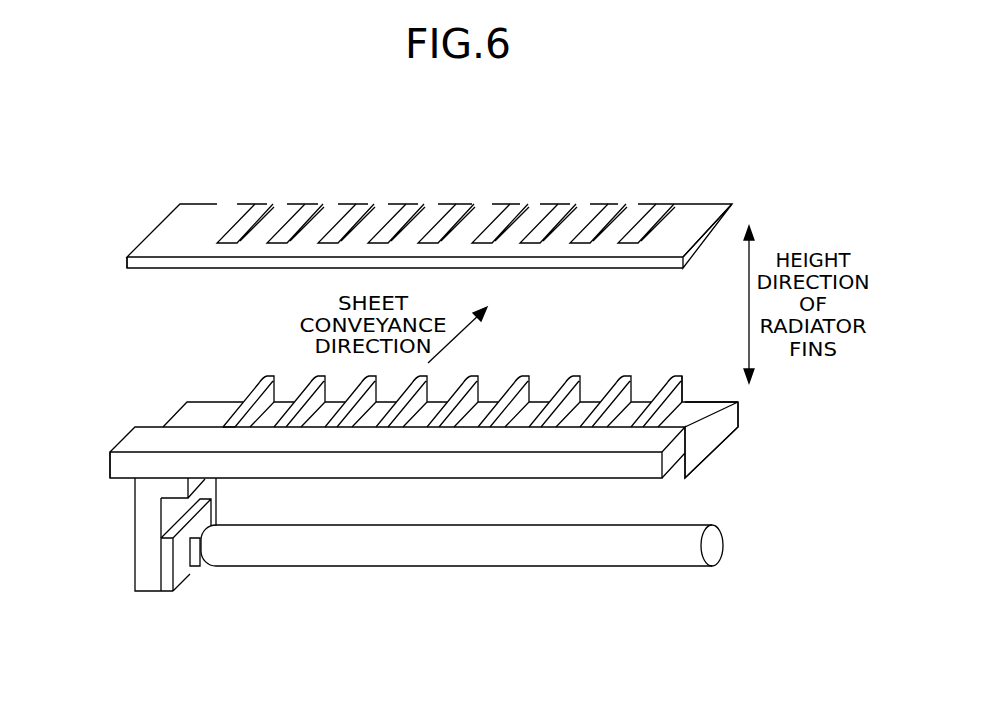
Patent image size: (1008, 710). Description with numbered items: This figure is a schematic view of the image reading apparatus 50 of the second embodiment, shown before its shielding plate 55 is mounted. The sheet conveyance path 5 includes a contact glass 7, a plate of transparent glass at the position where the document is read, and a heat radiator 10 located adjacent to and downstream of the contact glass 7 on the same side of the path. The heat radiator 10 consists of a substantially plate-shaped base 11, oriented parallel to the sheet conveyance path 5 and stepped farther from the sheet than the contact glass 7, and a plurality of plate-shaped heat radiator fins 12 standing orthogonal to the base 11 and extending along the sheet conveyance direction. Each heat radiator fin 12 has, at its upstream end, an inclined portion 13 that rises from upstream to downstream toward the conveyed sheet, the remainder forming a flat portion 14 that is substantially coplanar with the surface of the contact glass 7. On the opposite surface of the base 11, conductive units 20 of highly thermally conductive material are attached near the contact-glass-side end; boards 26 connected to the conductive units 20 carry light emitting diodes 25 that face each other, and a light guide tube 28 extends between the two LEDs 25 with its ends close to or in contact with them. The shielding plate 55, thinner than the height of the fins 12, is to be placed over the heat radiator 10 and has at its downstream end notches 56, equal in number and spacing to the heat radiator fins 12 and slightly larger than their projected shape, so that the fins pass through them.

The sheet conveyance path 5 is at (137, 442).
The contact glass 7 is at (108, 458).
The heat radiator 10 is at (174, 414).
The base 11 is at (717, 383).
The heat radiator fin 12 is at (670, 378).
The inclined portion 13 is at (237, 411).
The flat portion 14 is at (262, 380).
The conductive unit 20 is at (148, 593).
The light emitting diode (LED) 25 is at (190, 555).
The board 26 is at (168, 593).
The light guide tube 28 is at (437, 568).
The image reading apparatus 50 is at (646, 155).
The shielding plate 55 is at (152, 220).
The notch 56 is at (262, 213).